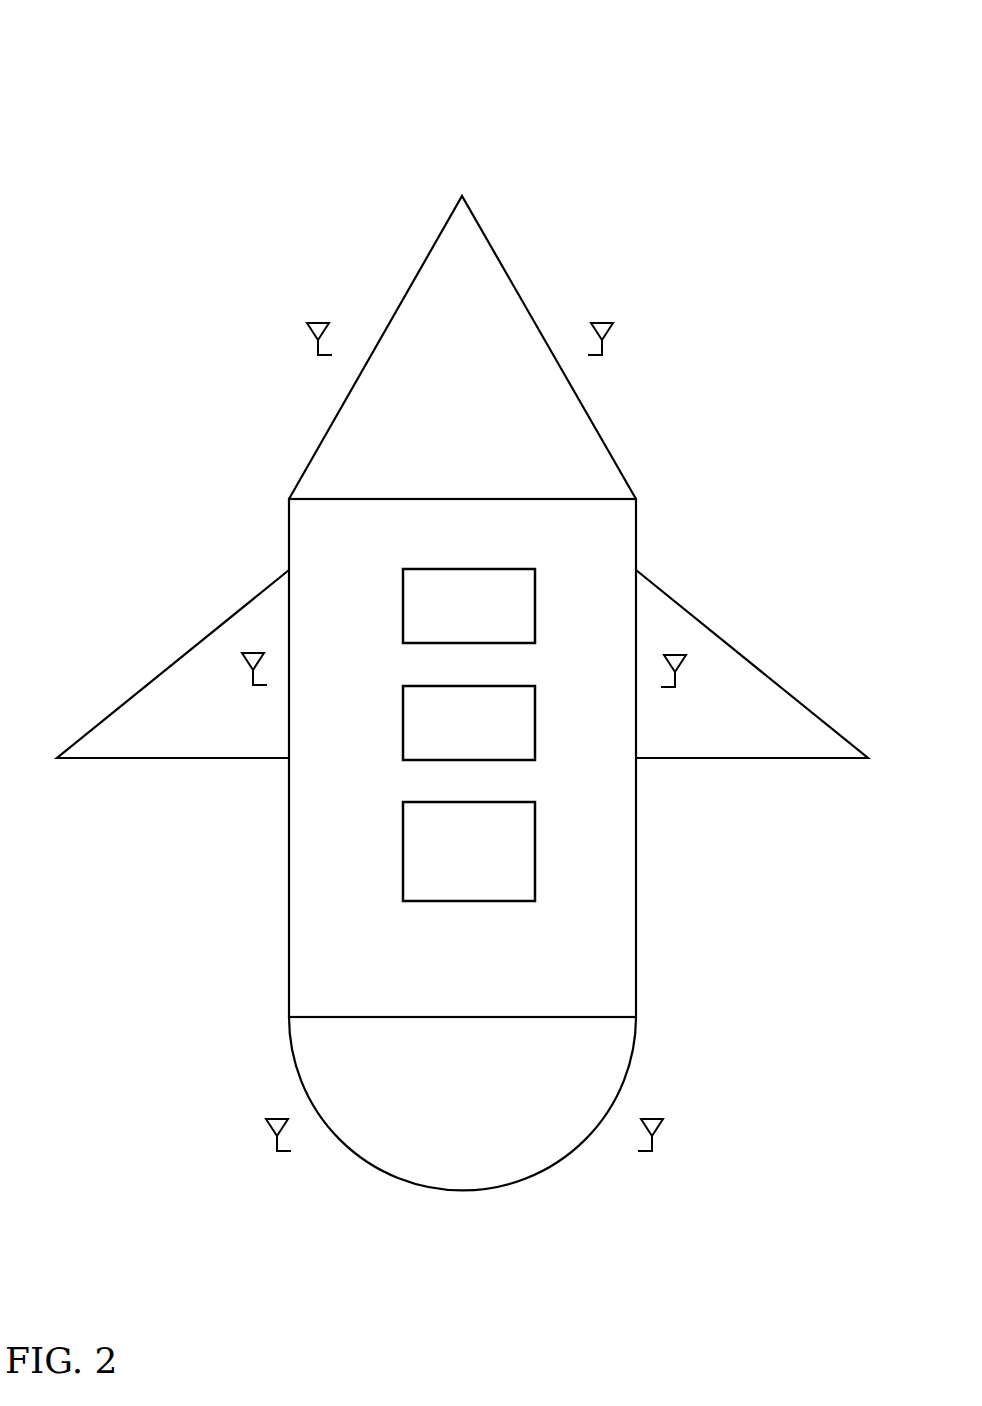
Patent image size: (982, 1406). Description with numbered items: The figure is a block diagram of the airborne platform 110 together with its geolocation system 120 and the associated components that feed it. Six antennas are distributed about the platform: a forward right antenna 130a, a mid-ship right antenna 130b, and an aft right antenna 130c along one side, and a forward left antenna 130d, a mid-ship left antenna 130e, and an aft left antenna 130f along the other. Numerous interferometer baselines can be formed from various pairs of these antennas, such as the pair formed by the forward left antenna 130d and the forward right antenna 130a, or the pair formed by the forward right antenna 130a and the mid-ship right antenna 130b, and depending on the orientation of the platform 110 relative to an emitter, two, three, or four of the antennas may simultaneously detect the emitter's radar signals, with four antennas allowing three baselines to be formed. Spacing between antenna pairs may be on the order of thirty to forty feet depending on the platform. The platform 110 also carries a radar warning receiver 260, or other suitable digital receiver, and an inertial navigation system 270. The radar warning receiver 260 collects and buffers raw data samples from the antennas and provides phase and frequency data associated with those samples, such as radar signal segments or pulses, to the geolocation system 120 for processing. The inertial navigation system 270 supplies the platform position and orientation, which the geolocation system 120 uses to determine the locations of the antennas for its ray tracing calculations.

The airborne platform 110 is at (71, 45).
The forward right antenna 130a is at (658, 358).
The mid-ship right antenna 130b is at (702, 726).
The aft right antenna 130c is at (635, 1211).
The forward left antenna 130d is at (227, 359).
The mid-ship left antenna 130e is at (183, 719).
The aft left antenna 130f is at (258, 1211).
The radar warning receiver 260 is at (453, 628).
The inertial navigation system 270 is at (453, 745).
The geolocation system 120 is at (453, 885).